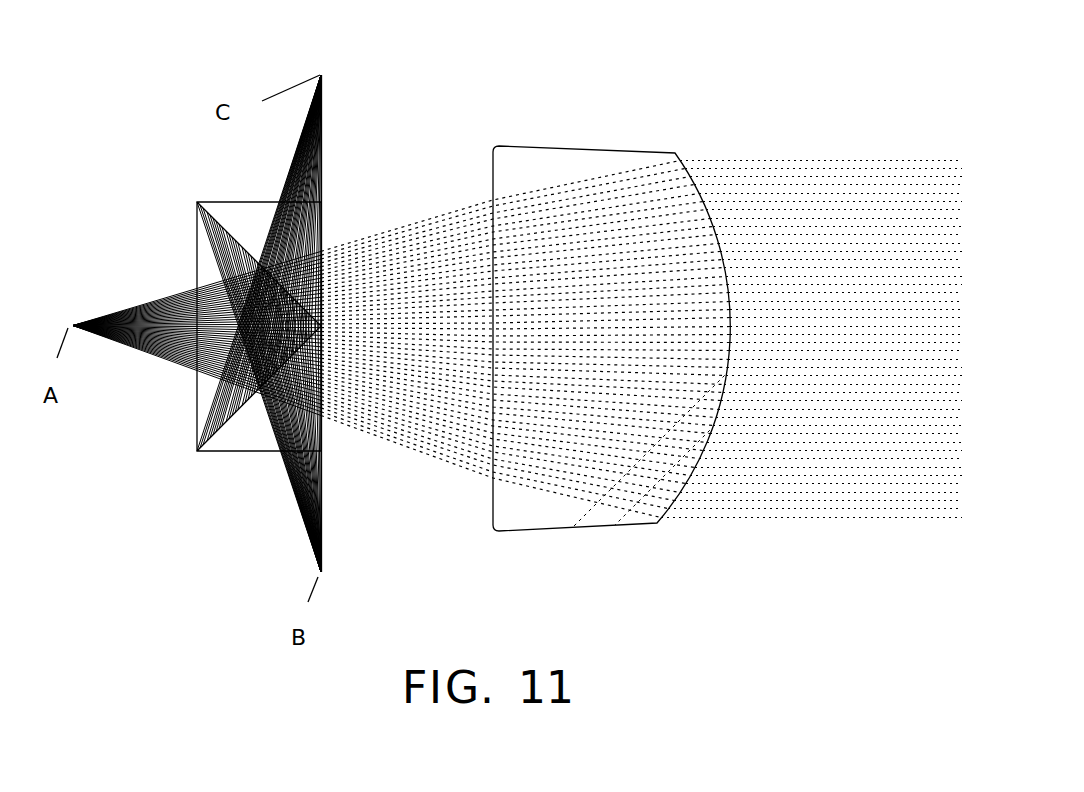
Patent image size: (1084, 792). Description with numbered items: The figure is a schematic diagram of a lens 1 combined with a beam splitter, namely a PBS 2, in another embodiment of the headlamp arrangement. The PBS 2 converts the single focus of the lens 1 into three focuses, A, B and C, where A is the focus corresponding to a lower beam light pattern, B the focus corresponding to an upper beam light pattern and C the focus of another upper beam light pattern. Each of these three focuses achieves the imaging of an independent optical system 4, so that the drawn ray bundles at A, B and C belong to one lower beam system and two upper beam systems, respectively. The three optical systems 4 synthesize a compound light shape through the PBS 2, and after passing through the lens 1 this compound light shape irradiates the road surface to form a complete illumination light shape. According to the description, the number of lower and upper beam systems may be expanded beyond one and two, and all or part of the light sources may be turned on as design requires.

The lens 1 is at (542, 162).
The PBS 2 is at (217, 222).
The optical system 4 is at (341, 161).